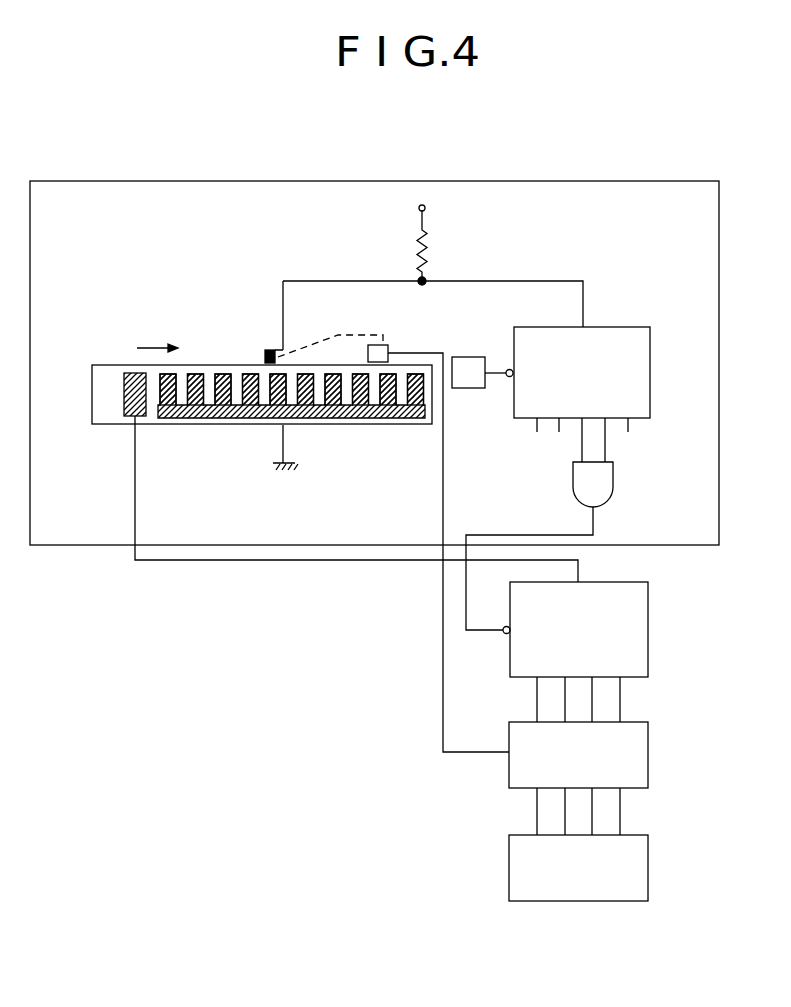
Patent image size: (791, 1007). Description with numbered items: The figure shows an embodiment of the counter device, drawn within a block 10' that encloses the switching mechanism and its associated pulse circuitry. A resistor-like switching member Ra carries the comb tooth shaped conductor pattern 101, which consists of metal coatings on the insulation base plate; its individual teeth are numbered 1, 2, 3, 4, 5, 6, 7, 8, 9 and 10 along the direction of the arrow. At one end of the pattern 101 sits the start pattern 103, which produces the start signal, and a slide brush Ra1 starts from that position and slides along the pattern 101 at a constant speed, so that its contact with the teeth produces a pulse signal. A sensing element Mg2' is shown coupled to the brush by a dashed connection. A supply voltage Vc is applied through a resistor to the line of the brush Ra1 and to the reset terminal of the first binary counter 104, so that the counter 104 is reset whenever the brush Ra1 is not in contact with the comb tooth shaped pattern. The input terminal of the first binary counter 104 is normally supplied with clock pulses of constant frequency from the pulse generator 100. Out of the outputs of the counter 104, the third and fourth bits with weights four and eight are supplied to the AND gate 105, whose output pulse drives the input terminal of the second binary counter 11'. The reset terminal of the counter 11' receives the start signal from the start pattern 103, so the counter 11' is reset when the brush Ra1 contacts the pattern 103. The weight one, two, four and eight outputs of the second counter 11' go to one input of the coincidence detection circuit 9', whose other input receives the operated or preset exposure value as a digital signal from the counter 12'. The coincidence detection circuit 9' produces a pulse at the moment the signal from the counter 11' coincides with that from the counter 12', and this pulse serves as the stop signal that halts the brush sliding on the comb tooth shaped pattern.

The position detecting circuit 10' is at (374, 336).
The variable resistor Ra is at (100, 403).
The slide brush Ra1 is at (265, 350).
The comb tooth shaped conductor pattern 101 is at (223, 372).
The start pattern 103 is at (130, 398).
The resistor segment 1 is at (167, 395).
The resistor segment 2 is at (193, 395).
The resistor segment 3 is at (219, 395).
The resistor segment 4 is at (246, 395).
The resistor segment 5 is at (277, 395).
The resistor segment 6 is at (305, 395).
The resistor segment 7 is at (335, 395).
The resistor segment 8 is at (365, 395).
The resistor segment 9 is at (392, 418).
The resistor segment 10 is at (421, 418).
The magnetic sensor Mg2' is at (393, 528).
The voltage Vc is at (432, 238).
The pulse generator 100 is at (471, 380).
The first binary counter 104 is at (626, 338).
The AND gate 105 is at (539, 548).
The second binary counter 11' is at (600, 642).
The coincidence detection circuit 9' is at (578, 780).
The counter 12' is at (578, 868).